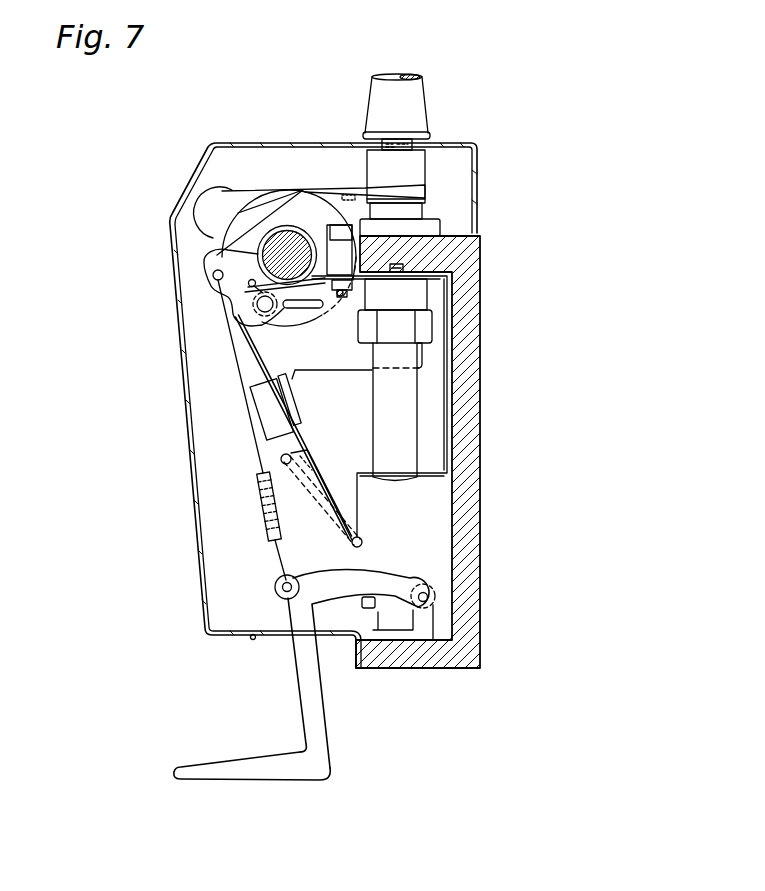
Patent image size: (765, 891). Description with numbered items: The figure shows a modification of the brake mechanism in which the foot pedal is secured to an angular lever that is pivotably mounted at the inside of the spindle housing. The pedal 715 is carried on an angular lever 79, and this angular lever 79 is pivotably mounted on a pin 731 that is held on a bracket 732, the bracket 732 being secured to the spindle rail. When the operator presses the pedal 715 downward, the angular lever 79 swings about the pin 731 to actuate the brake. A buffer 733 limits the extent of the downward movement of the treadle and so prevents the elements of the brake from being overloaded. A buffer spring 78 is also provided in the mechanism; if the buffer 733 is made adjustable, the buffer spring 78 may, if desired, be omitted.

The buffer spring 78 is at (263, 509).
The angular lever 79 is at (310, 677).
The pedal 715 is at (255, 768).
The pin 731 is at (433, 597).
The bracket 732 is at (427, 623).
The buffer 733 is at (365, 608).